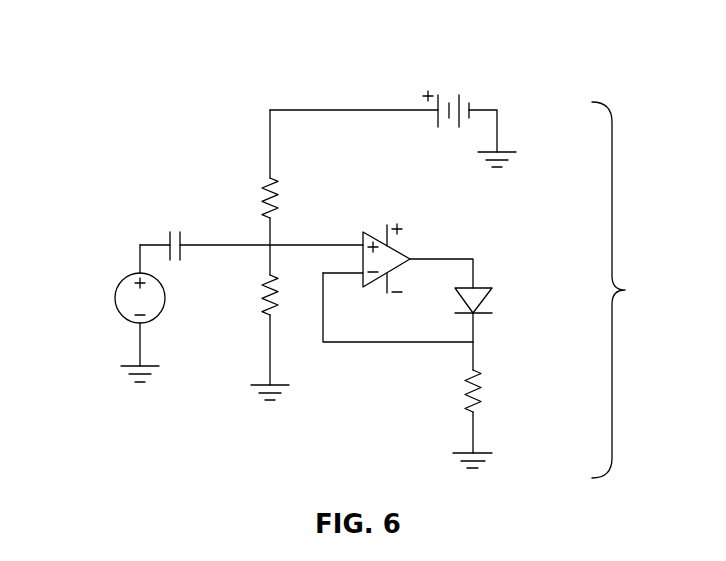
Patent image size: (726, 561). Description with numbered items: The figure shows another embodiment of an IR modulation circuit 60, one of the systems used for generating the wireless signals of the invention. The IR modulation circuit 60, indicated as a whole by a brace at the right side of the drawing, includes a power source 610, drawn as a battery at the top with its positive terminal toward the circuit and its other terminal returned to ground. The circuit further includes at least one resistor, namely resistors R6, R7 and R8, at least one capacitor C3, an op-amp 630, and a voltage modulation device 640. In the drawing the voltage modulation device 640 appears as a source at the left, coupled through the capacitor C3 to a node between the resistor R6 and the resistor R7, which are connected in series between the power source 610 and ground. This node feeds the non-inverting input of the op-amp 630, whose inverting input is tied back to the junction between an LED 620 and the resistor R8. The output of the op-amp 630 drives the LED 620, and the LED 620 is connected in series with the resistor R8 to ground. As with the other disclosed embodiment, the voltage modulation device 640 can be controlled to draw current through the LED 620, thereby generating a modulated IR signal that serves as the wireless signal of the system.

The capacitor C3 is at (172, 229).
The resistor R6 is at (284, 180).
The resistor R7 is at (253, 300).
The resistor R8 is at (455, 399).
The power source 610 is at (472, 87).
The LED 620 is at (497, 272).
The op-amp 630 is at (400, 250).
The voltage modulation device 640 is at (114, 303).
The IR modulation circuit 60 is at (628, 290).